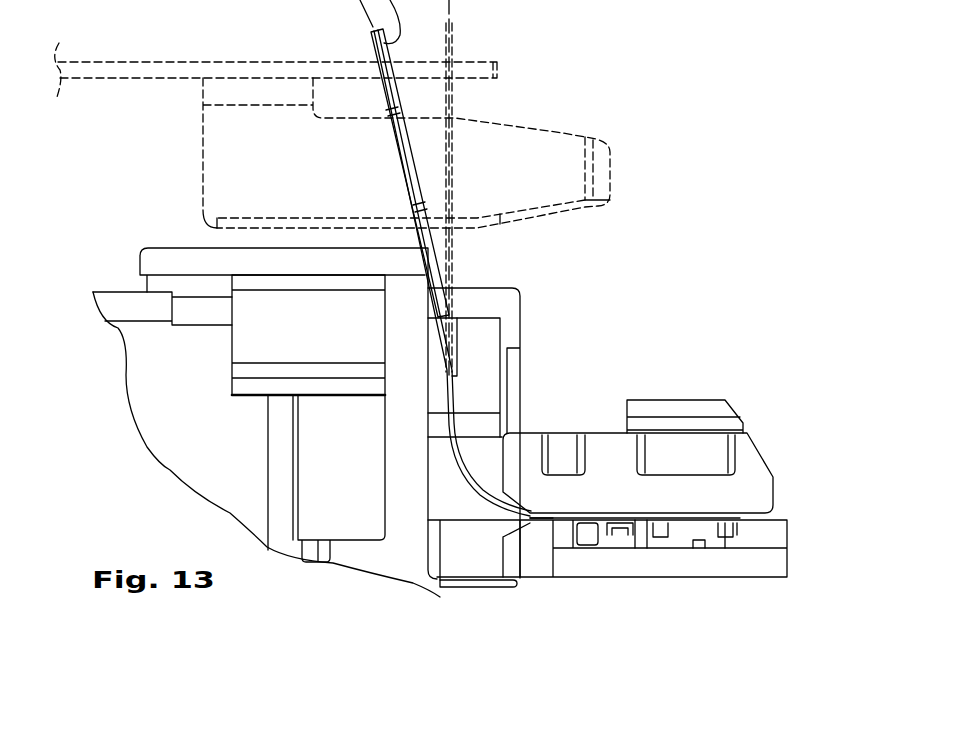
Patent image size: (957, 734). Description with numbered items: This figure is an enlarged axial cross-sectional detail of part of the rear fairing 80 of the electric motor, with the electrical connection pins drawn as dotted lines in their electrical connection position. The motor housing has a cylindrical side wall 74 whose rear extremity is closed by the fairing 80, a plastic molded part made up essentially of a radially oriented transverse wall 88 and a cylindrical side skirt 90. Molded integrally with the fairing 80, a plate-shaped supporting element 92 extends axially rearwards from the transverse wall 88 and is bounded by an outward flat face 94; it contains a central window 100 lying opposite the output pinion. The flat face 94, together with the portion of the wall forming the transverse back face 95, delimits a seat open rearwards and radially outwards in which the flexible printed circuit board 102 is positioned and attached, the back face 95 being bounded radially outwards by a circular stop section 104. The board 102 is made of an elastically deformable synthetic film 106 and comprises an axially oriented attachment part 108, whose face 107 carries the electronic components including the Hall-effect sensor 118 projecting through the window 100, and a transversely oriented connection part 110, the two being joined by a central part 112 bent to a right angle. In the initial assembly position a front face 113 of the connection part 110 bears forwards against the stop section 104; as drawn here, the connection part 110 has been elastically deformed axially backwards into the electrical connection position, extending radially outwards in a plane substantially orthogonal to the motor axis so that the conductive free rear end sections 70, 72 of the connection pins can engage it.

The conductive free rear end section 70 is at (479, 58).
The conductive free rear end section 72 is at (562, 133).
The cylindrical side wall 74 is at (127, 310).
The rear fairing 80 is at (203, 379).
The transverse wall 88 is at (402, 482).
The cylindrical side skirt 90 is at (167, 262).
The supporting element 92 is at (817, 536).
The flat face 94 is at (778, 517).
The transverse back face 95 is at (428, 398).
The central window 100 is at (748, 534).
The flexible printed circuit board 102 is at (486, 383).
The circular stop section 104 is at (428, 250).
The elastically deformable film 106 is at (456, 377).
The face 107 is at (540, 520).
The attachment part 108 is at (545, 522).
The connection part 110 is at (380, 167).
The central part 112 is at (473, 488).
The front face 113 is at (418, 240).
The sensor 118 is at (680, 537).